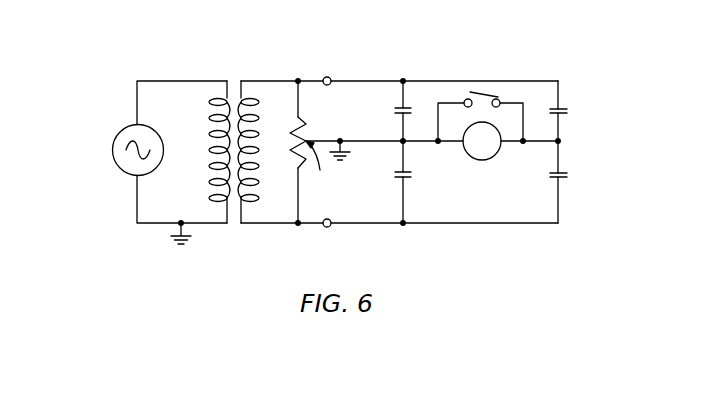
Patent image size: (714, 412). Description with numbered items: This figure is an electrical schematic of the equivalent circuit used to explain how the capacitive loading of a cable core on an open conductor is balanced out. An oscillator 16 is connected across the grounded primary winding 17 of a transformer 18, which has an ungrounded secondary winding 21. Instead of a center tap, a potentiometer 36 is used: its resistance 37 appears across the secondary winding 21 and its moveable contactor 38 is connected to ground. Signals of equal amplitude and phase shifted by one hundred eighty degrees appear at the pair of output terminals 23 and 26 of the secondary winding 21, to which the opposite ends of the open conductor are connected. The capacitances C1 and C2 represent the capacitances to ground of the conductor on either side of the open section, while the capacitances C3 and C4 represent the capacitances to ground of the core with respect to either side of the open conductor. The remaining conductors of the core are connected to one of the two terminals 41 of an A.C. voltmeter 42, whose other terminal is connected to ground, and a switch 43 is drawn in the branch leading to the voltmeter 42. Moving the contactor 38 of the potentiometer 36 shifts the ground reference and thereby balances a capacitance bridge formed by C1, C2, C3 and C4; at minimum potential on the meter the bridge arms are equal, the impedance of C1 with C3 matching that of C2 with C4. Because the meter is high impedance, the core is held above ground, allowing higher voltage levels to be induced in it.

The oscillator 16 is at (114, 161).
The primary winding 17 is at (211, 184).
The transformer 18 is at (234, 124).
The secondary winding 21 is at (258, 198).
The output terminal 23 is at (330, 77).
The output terminal 26 is at (327, 228).
The potentiometer 36 is at (316, 128).
The resistance 37 is at (299, 131).
The moveable contactor 38 is at (323, 167).
The terminals 41 is at (439, 146).
The A.C. voltmeter 42 is at (482, 160).
The switch 43 is at (498, 97).
The capacitance C1 is at (391, 110).
The capacitance C2 is at (390, 172).
The capacitance C3 is at (574, 112).
The capacitance C4 is at (574, 175).